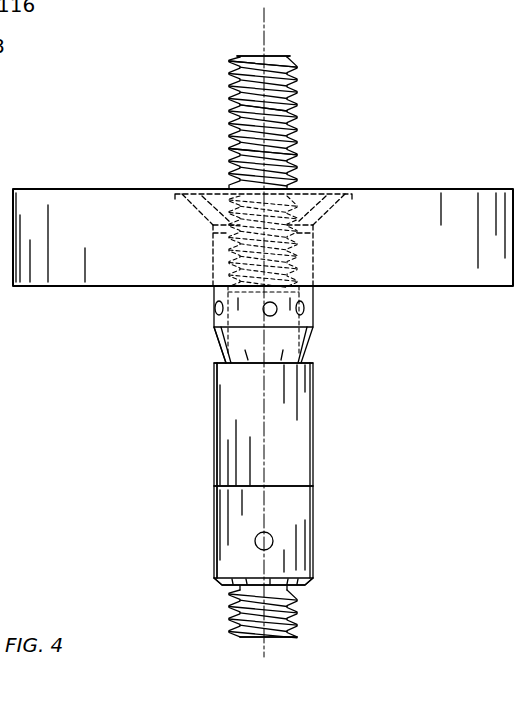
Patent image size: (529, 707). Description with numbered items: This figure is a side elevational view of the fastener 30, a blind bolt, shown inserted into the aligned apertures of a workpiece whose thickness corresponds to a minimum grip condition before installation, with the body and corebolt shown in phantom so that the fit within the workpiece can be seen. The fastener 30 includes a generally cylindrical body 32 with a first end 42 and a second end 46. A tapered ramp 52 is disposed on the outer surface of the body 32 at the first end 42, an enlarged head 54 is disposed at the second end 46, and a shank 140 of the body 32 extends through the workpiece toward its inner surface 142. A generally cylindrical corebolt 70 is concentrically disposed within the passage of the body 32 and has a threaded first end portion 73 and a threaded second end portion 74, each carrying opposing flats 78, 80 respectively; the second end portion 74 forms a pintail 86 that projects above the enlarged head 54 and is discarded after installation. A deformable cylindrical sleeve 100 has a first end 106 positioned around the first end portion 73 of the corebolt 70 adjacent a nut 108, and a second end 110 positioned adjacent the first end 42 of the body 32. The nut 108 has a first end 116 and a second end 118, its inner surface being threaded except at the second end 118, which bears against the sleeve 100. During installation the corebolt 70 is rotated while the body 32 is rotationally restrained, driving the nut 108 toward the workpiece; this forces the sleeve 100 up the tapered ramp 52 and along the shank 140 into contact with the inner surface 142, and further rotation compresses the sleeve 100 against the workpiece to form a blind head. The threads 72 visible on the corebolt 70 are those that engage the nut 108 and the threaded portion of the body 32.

The fastener 30 is at (137, 435).
The body 32 is at (313, 300).
The first end 42 is at (308, 345).
The second end 46 is at (338, 205).
The tapered ramp 52 is at (218, 337).
The enlarged head 54 is at (193, 203).
The corebolt 70 is at (295, 100).
The threads 72 is at (297, 150).
The first end portion 73 is at (297, 605).
The second end portion 74 is at (285, 57).
The flats 78 is at (268, 632).
The flats 80 is at (270, 58).
The pintail 86 is at (234, 104).
The sleeve 100 is at (308, 423).
The first end 106 is at (220, 467).
The nut 108 is at (222, 530).
The second end 110 is at (222, 374).
The first end 116 is at (303, 565).
The second end 118 is at (315, 494).
The shank 140 is at (222, 292).
The inner surface 142 is at (428, 287).